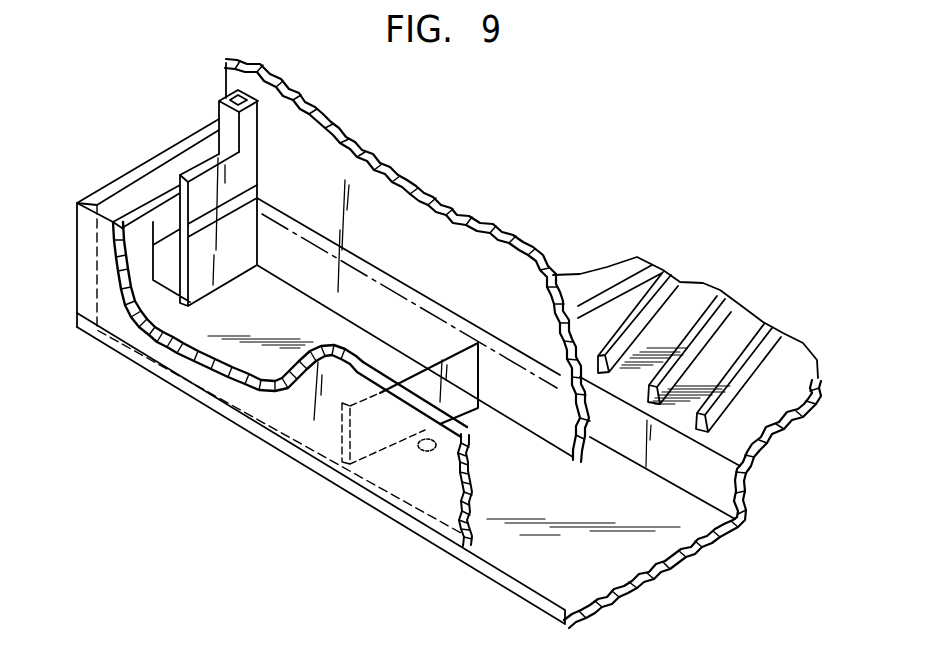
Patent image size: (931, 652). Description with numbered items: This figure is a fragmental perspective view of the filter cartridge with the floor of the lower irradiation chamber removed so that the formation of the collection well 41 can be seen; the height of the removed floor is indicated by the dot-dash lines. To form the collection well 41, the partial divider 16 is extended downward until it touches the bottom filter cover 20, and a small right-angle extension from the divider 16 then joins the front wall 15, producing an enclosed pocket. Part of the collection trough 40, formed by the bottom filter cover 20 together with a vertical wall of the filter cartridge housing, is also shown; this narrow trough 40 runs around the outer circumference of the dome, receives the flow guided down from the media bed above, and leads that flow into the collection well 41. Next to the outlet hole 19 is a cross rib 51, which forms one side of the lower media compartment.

The front wall 15 is at (130, 200).
The partial divider 16 is at (213, 162).
The outlet hole 19 is at (424, 452).
The bottom filter cover 20 is at (197, 323).
The collection trough 40 is at (602, 437).
The collection well 41 is at (177, 220).
The cross rib 51 is at (460, 392).